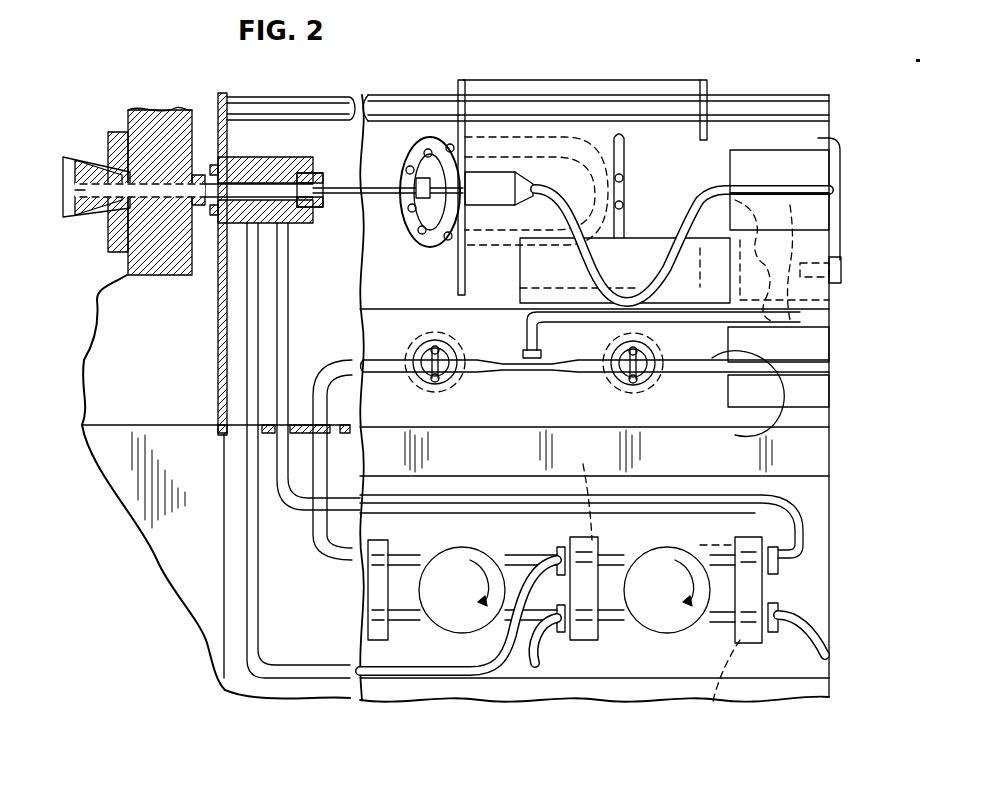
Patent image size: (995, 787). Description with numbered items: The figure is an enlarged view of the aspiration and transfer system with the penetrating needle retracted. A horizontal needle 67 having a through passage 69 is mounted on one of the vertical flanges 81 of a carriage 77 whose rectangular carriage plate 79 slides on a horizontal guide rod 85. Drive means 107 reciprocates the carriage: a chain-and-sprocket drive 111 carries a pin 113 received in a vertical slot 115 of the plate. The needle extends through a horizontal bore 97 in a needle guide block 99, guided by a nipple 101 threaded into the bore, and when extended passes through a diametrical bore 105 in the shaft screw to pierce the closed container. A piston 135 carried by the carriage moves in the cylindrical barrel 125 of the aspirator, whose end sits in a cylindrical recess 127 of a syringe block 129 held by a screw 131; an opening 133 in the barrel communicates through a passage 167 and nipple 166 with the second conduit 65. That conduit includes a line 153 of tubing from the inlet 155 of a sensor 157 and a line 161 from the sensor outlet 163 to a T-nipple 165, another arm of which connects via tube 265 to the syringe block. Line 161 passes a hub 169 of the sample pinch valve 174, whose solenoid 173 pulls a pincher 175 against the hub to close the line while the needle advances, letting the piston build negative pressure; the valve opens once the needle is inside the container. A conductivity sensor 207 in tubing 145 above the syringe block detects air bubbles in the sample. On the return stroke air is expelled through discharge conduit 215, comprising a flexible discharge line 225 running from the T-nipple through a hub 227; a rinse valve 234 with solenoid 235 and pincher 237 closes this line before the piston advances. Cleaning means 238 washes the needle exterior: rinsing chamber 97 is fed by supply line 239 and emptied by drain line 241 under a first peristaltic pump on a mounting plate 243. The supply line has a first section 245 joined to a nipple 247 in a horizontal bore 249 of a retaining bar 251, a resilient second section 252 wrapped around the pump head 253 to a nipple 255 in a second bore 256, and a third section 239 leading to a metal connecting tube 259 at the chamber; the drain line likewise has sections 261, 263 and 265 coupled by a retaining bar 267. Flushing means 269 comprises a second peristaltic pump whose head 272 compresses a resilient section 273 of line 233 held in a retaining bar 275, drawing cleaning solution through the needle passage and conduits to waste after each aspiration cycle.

The second conduit 65 is at (680, 284).
The needle 67 is at (382, 105).
The passage 69 is at (337, 97).
The carriage means 77 is at (462, 301).
The carriage plate 79 is at (480, 312).
The vertical flanges 81 is at (437, 110).
The horizontal guide rod 85 is at (402, 100).
The horizontal bore 97 is at (279, 157).
The needle guide block 99 is at (257, 150).
The nipple 101 is at (320, 207).
The diametrical bore 105 is at (168, 275).
The drive means 107 is at (575, 137).
The chain-and-sprocket drive 111 is at (412, 235).
The pin 113 is at (676, 120).
The vertical slot 115 is at (623, 130).
The cylindrical barrel 125 is at (638, 250).
The cylindrical recess 127 is at (698, 193).
The cylindrical block 129 is at (826, 318).
The screw 131 is at (810, 193).
The opening 133 is at (779, 171).
The piston 135 is at (500, 273).
The tubing 145 is at (770, 180).
The line 153 is at (829, 372).
The inlet 155 is at (778, 391).
The sensor 157 is at (722, 393).
The line 161 is at (732, 399).
The outlet 163 is at (722, 373).
The T-nipple 165 is at (535, 400).
The nipple 166 is at (778, 344).
The passage 167 is at (779, 211).
The hub 169 is at (607, 379).
The solenoid 173 is at (660, 335).
The sample pinch valve 174 is at (598, 372).
The pincher 175 is at (633, 377).
The conductivity sensor 207 is at (755, 150).
The discharge conduit 215 is at (594, 398).
The flexible discharge line 225 is at (470, 376).
The hub 227 is at (440, 386).
The line 233 is at (320, 572).
The rinse valve 234 is at (428, 376).
The solenoid 235 is at (448, 350).
The pincher 237 is at (425, 386).
The cleaning means 238 is at (290, 303).
The supply line 239 is at (790, 490).
The drain line 241 is at (240, 518).
The mounting plate 243 is at (235, 657).
The first section 245 is at (815, 660).
The nipple 247 is at (775, 635).
The horizontal bore 249 is at (720, 690).
The retaining bar 251 is at (748, 645).
The second section 252 is at (710, 625).
The pump head 253 is at (672, 548).
The nipple 255 is at (780, 565).
The second horizontal bore 256 is at (647, 497).
The metal connecting tube 259 is at (298, 450).
The first section 261 is at (545, 665).
The middle section 263 is at (590, 642).
The tube 265 is at (247, 299).
The retaining bar 267 is at (582, 642).
The flushing means 269 is at (462, 636).
The pump head 272 is at (465, 557).
The resilient section 273 is at (405, 556).
The retaining bar 275 is at (378, 642).